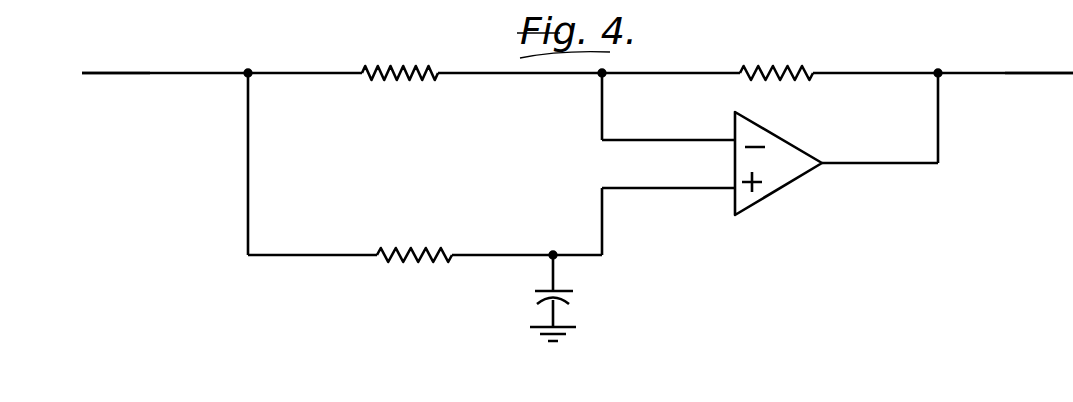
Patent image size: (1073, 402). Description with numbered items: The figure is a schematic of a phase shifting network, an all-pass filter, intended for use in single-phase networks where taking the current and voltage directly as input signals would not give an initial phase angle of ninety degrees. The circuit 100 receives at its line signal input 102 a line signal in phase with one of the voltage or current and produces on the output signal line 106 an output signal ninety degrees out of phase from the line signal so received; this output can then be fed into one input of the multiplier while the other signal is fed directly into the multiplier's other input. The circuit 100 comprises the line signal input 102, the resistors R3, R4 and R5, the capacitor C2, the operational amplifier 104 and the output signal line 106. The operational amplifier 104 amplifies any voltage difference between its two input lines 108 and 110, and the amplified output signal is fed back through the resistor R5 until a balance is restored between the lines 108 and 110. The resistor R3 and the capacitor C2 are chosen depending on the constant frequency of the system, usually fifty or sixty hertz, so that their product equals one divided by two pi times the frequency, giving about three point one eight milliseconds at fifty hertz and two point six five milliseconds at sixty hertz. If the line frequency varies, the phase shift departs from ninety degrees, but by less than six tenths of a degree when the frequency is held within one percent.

The circuit 100 is at (703, 46).
The line signal input 102 is at (152, 73).
The operational amplifier 104 is at (770, 178).
The output signal line 106 is at (1003, 73).
The line 108 is at (688, 140).
The line 110 is at (678, 186).
The resistor R3 is at (414, 241).
The resistor R4 is at (400, 57).
The resistor R5 is at (776, 57).
The capacitor C2 is at (574, 298).